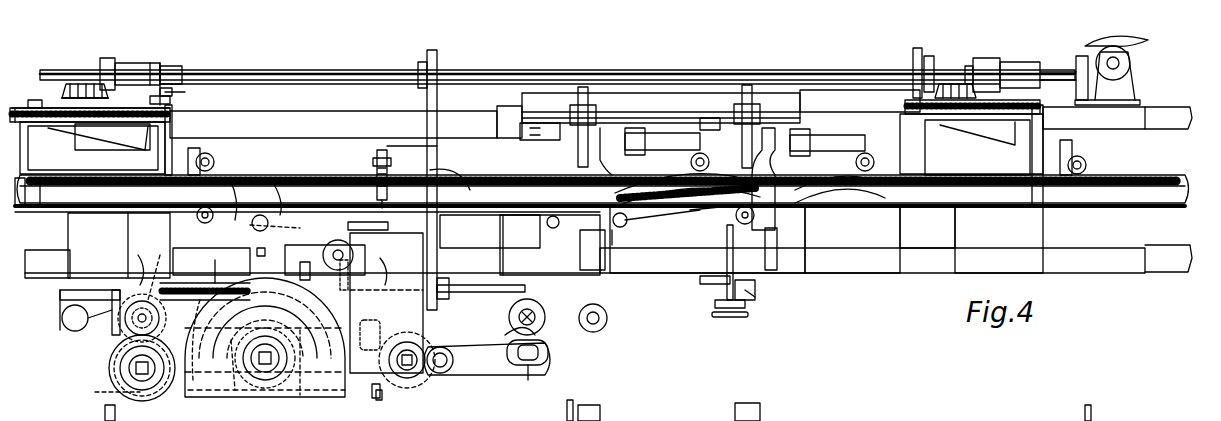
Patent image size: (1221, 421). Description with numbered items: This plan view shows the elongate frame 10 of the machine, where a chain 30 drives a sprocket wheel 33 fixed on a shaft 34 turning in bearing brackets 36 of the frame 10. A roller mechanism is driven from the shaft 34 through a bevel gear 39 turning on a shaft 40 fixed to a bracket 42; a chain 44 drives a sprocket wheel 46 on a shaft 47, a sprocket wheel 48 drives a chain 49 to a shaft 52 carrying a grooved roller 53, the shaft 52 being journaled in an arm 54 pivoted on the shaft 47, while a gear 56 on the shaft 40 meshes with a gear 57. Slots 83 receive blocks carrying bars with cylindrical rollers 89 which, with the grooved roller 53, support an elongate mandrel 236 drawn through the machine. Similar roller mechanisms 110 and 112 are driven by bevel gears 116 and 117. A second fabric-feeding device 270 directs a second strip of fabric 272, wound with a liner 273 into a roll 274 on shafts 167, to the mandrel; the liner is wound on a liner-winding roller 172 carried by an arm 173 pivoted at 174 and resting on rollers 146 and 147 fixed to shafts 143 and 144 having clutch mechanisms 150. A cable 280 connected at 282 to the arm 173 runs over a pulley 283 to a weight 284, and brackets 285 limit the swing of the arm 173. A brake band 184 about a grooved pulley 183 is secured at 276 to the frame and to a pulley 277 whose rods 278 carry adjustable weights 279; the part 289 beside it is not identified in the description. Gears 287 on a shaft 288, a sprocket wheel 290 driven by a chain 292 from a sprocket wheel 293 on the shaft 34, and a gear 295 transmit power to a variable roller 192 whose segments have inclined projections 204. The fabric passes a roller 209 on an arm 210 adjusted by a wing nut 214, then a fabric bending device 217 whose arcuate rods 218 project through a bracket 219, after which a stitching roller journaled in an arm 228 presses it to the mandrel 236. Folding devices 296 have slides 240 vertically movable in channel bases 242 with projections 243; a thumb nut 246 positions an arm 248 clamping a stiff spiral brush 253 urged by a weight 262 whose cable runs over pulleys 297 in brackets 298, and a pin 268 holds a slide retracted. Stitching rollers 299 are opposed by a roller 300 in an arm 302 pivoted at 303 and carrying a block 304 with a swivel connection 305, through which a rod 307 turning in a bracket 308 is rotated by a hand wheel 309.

The elongate frame 10 is at (1085, 274).
The chain 30 is at (916, 48).
The sprocket wheel 33 is at (930, 56).
The shaft 34 is at (44, 70).
The bearing brackets 36 is at (165, 66).
The bevel gear 39 is at (70, 84).
The shaft 40 is at (958, 84).
The bracket 42 is at (172, 127).
The chain 44 is at (168, 90).
The sprocket wheel 46 is at (172, 100).
The shaft 47 is at (125, 245).
The sprocket wheel 48 is at (172, 110).
The chain 49 is at (122, 128).
The shaft 52 is at (905, 205).
The grooved roller 53 is at (55, 212).
The arm 54 is at (95, 205).
The gear 56 is at (50, 127).
The gear 57 is at (36, 101).
The slots 83 is at (196, 216).
The rollers 89 is at (214, 160).
The roller mechanism 110 is at (16, 104).
The roller mechanism 112 is at (925, 208).
The bevel gear 116 is at (108, 62).
The bevel gear 117 is at (985, 58).
The shaft 143 is at (158, 312).
The shaft 144 is at (550, 352).
The roller 146 is at (163, 312).
The roller 147 is at (500, 372).
The clutch mechanisms 150 is at (98, 318).
The shafts 167 is at (265, 381).
The liner-winding roller 172 is at (308, 382).
The arm 173 is at (340, 404).
The pivotal mounting 174 is at (440, 374).
The grooved pulley 183 is at (338, 374).
The flexible brake band 184 is at (265, 337).
The variable roller 192 is at (355, 225).
The internally inclined projections 204 is at (300, 260).
The roller 209 is at (232, 200).
The arm 210 is at (272, 205).
The wing nut 214 is at (286, 229).
The fabric bending device 217 is at (373, 160).
The arcuate parallel rods 218 is at (437, 146).
The bracket 219 is at (390, 176).
The arm 228 is at (645, 130).
The elongate mandrel 236 is at (38, 207).
The slide 240 is at (605, 128).
The channel base 242 is at (780, 112).
The integral projection 243 is at (625, 249).
The thumb nut 246 is at (628, 222).
The arm 248 is at (655, 243).
The stiff spiral brush 253 is at (830, 230).
The weight 262 is at (552, 93).
The pin 268 is at (528, 140).
The second fabric-feeding device 270 is at (311, 260).
The second strip of fabric 272 is at (402, 335).
The liner 273 is at (452, 168).
The roll 274 is at (225, 379).
The securing point 276 is at (240, 340).
The pulley 277 is at (321, 275).
The rods 278 is at (364, 323).
The weights 279 is at (375, 395).
The cable 280 is at (112, 345).
The connection 282 is at (108, 370).
The pulley 283 is at (60, 292).
The weight 284 is at (66, 310).
The brackets 285 is at (465, 400).
The gears 287 is at (320, 290).
The shaft 288 is at (215, 280).
The pulley 289 is at (510, 310).
The sprocket wheel 290 is at (455, 283).
The chain 292 is at (490, 231).
The sprocket wheel 293 is at (440, 66).
The gear 295 is at (386, 278).
The folding devices 296 is at (678, 249).
The pulleys 297 is at (585, 86).
The bracket 298 is at (598, 408).
The rollers 299 is at (700, 152).
The roller 300 is at (720, 250).
The arm 302 is at (755, 286).
The pivotal connection 303 is at (720, 275).
The block 304 is at (712, 225).
The swivel connection 305 is at (708, 283).
The rod 307 is at (717, 307).
The bracket 308 is at (765, 299).
The hand wheel 309 is at (730, 317).